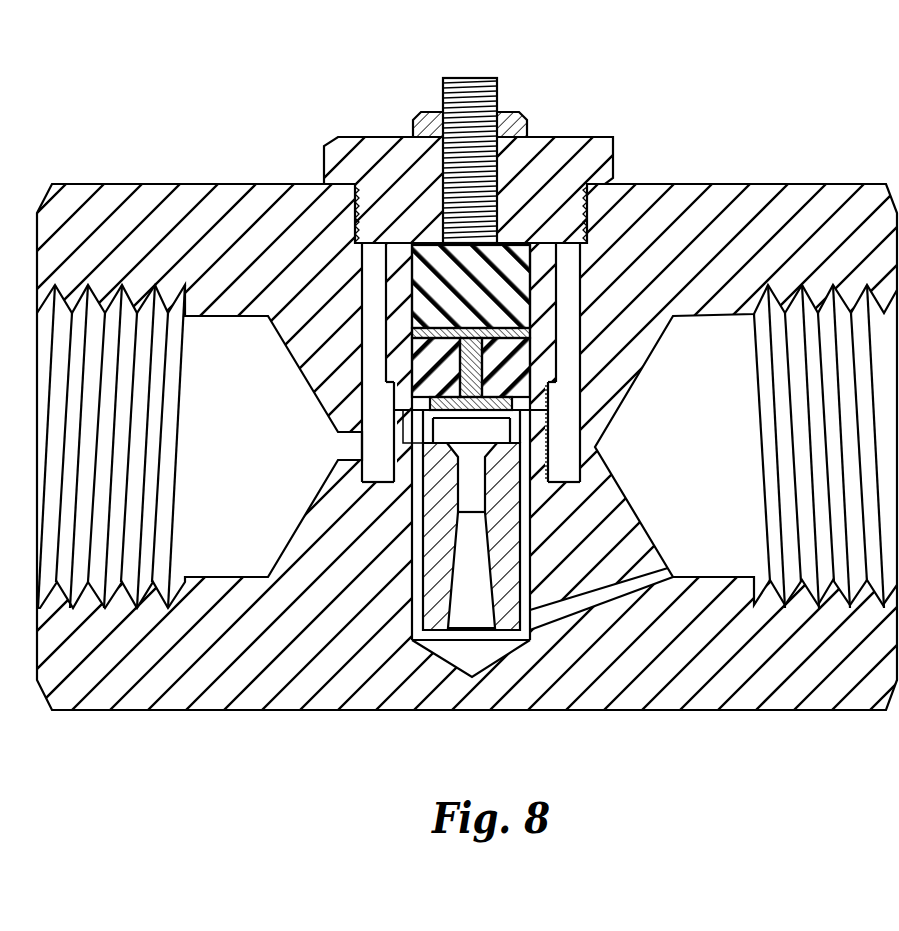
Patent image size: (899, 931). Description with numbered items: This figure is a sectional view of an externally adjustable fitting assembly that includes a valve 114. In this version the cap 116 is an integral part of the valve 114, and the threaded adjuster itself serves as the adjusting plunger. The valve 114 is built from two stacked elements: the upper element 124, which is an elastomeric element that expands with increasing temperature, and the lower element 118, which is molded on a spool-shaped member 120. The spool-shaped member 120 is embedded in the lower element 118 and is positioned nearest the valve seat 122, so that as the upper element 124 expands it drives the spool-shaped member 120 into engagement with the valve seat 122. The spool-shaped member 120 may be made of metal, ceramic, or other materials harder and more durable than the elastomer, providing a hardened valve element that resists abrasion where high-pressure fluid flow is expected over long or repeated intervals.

The valve 114 is at (565, 300).
The cap 116 is at (600, 138).
The lower element 118 is at (430, 387).
The spool-shaped member 120 is at (463, 362).
The valve seat 122 is at (427, 420).
The upper element 124 is at (500, 268).